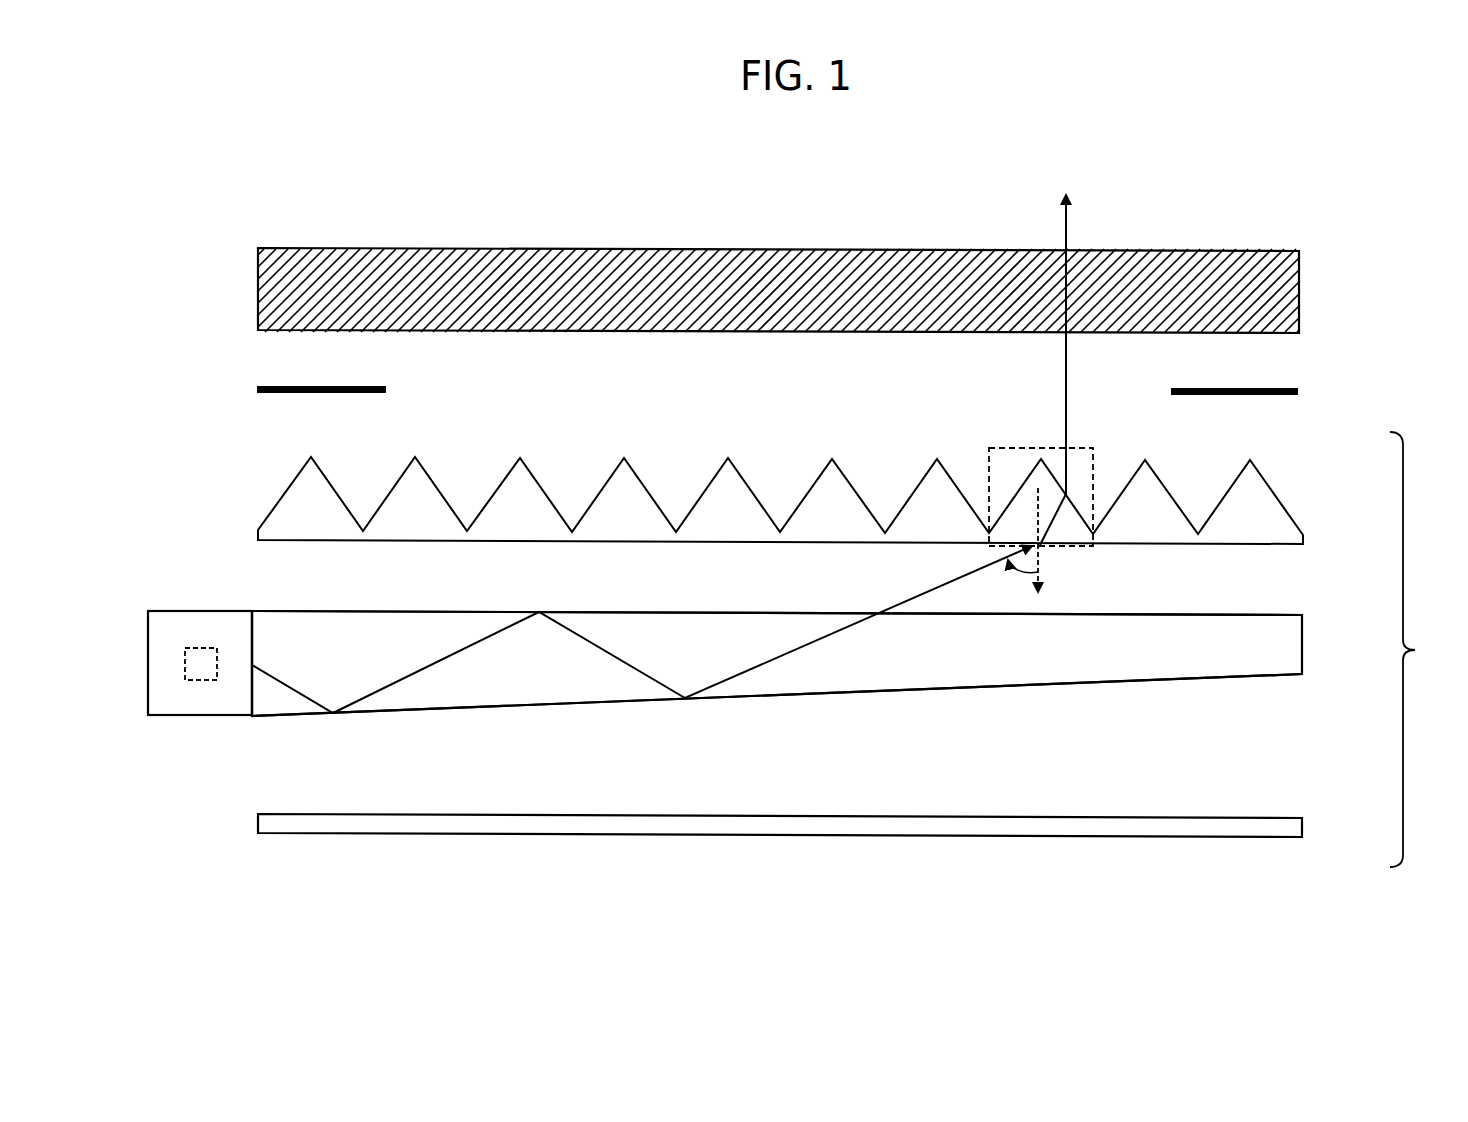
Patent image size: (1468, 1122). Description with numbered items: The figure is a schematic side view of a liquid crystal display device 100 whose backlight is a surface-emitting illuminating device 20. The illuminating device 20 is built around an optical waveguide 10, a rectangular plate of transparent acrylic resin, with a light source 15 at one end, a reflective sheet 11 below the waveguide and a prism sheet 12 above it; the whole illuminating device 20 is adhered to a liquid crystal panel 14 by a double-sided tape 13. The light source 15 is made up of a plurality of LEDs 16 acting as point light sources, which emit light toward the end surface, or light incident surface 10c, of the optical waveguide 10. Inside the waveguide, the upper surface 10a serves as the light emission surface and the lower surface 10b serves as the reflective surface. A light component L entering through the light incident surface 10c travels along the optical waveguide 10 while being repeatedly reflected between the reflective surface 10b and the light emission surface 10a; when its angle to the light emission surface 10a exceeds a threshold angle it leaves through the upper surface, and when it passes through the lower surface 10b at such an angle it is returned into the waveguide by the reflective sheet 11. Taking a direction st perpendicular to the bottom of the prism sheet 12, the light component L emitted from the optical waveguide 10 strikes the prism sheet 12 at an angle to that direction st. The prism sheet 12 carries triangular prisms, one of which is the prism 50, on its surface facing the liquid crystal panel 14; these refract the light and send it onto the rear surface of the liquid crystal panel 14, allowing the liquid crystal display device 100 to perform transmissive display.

The liquid crystal display device 100 is at (810, 172).
The liquid crystal panel 14 is at (1277, 290).
The double-sided tape 13 is at (272, 387).
The prism sheet 12 is at (1278, 520).
The prism 50 is at (1093, 450).
The optical waveguide 10 is at (1282, 642).
The upper surface 10a is at (300, 610).
The lower surface 10b is at (1240, 677).
The light incident surface 10c is at (251, 693).
The light source 15 is at (188, 610).
The LED 16 is at (185, 663).
The reflective sheet 11 is at (1288, 828).
The illuminating device 20 is at (1418, 649).
The light component L is at (217, 773).
The direction st is at (1043, 587).